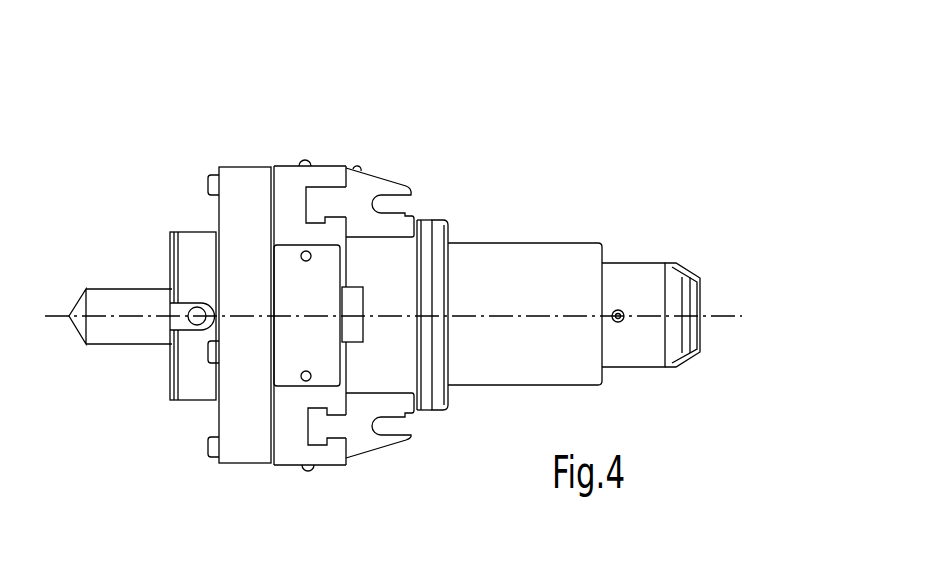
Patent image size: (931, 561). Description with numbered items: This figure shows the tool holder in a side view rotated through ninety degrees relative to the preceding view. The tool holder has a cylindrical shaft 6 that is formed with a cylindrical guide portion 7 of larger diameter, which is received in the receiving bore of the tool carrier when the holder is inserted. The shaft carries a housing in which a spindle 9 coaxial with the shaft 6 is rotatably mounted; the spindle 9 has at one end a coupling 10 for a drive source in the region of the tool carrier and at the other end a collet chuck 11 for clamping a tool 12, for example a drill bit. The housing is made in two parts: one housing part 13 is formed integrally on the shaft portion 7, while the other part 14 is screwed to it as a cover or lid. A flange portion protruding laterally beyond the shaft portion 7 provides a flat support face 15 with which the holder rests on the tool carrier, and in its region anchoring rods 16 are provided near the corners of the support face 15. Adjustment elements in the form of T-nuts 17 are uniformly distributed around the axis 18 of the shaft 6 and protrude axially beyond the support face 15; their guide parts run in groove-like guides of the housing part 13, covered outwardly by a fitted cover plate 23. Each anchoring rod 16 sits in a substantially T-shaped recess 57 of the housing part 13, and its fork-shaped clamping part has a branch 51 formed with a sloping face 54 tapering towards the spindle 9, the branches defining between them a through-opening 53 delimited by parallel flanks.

The cylindrical shaft 6 is at (552, 258).
The cylindrical guide portion 7 is at (393, 363).
The spindle 9 is at (633, 282).
The coupling 10 is at (697, 276).
The collet chuck 11 is at (192, 246).
The tool 12 is at (113, 330).
The housing part 13 is at (296, 445).
The housing part (lid) 14 is at (247, 455).
The support face 15 is at (347, 267).
The anchoring rod 16 is at (390, 165).
The T-nut 17 is at (353, 303).
The axis 18 is at (723, 315).
The cover plate 23 is at (317, 303).
The branch 51 is at (404, 455).
The through-opening 53 is at (418, 196).
The sloping face 54 is at (376, 172).
The T-shaped recess 57 is at (307, 203).